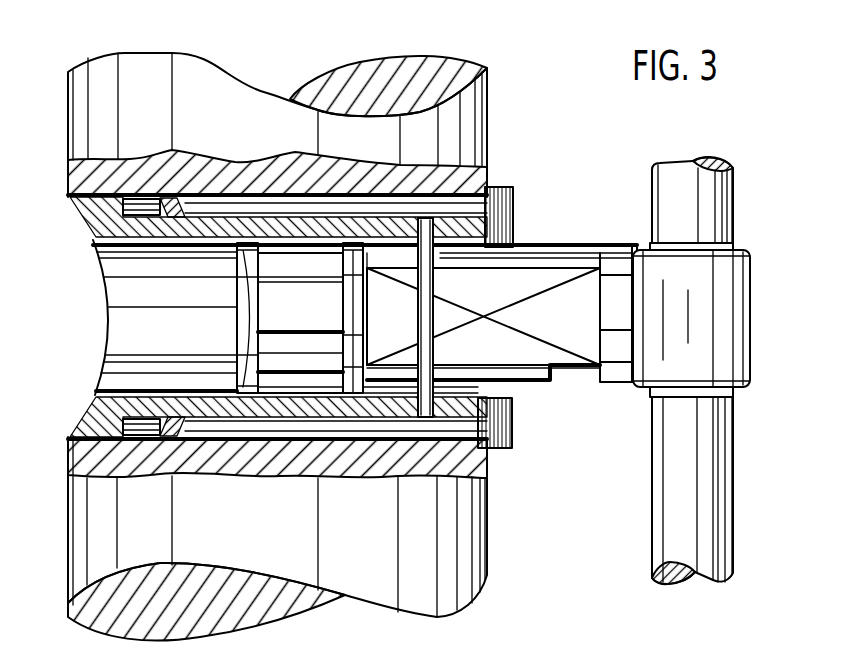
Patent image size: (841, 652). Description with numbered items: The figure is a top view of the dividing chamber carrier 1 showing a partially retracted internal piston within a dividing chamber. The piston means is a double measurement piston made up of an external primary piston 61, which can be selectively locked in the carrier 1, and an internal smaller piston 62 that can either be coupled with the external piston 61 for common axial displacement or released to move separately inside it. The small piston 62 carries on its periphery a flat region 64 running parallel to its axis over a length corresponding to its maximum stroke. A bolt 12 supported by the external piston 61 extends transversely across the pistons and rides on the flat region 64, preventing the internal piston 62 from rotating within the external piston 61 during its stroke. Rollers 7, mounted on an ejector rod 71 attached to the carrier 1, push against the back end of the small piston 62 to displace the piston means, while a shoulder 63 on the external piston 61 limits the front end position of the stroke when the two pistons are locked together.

The dividing chamber carrier 1 is at (207, 80).
The external primary piston 61 is at (112, 224).
The internal smaller piston 62 is at (568, 260).
The shoulder 63 is at (500, 186).
The flat region 64 is at (540, 360).
The bolt 12 is at (437, 270).
The rollers 7 is at (728, 273).
The ejector rod 71 is at (677, 506).